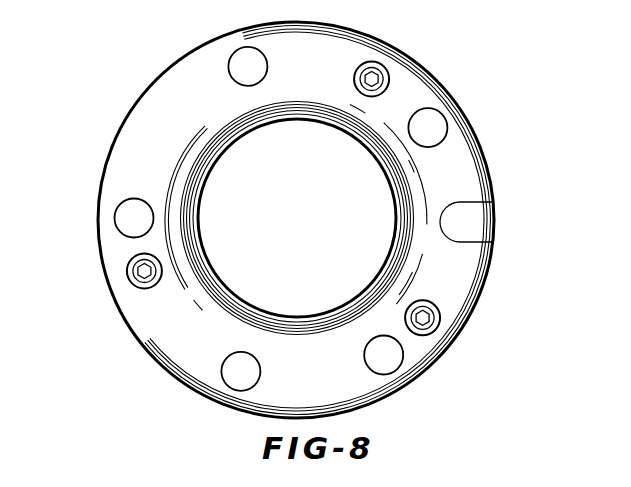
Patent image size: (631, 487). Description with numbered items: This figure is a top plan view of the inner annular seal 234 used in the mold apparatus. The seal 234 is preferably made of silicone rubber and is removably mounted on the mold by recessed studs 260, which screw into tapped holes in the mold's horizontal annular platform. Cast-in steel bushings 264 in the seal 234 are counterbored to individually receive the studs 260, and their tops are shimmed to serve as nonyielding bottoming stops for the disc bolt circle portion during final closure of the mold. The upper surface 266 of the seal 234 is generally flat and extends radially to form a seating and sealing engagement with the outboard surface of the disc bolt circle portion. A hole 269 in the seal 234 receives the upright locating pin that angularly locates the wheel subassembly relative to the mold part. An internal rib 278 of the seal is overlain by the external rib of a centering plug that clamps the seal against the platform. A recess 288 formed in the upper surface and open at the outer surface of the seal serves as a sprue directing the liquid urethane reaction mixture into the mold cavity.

The inner annular seal 234 is at (466, 103).
The upper surface 266 is at (470, 171).
The hole 269 is at (121, 216).
The internal rib 278 is at (317, 317).
The recess 288 is at (488, 207).
The recessed studs 260 is at (428, 318).
The cast-in steel bushings 264 is at (436, 330).